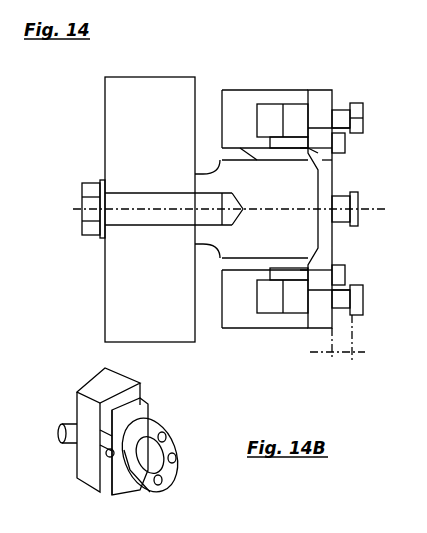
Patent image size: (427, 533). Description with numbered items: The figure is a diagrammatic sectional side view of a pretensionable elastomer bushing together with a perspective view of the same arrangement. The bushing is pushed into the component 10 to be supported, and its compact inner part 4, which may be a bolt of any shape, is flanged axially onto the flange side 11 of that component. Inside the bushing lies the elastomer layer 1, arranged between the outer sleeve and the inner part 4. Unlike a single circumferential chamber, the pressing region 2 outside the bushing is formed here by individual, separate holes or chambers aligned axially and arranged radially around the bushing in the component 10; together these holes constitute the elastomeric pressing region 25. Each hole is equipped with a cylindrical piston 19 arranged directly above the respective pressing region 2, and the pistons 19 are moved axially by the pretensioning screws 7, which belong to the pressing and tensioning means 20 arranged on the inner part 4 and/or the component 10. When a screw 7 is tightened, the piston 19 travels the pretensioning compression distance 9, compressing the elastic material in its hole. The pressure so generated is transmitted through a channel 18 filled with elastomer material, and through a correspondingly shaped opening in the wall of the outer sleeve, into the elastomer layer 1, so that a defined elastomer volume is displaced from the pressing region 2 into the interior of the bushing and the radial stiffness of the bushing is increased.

The elastomer layer 1 is at (255, 155).
The pressing region 2 is at (426, 190).
The inner part 4 is at (288, 215).
The pretensioning screw 7 is at (362, 112).
The pretensioning compression distance 9 is at (340, 356).
The component to be supported 10 is at (233, 102).
The flange side 11 is at (165, 90).
The channel 18 is at (308, 155).
The piston 19 is at (294, 122).
The tensioning means 20 is at (320, 100).
The elastomeric pressing region 25 is at (272, 120).